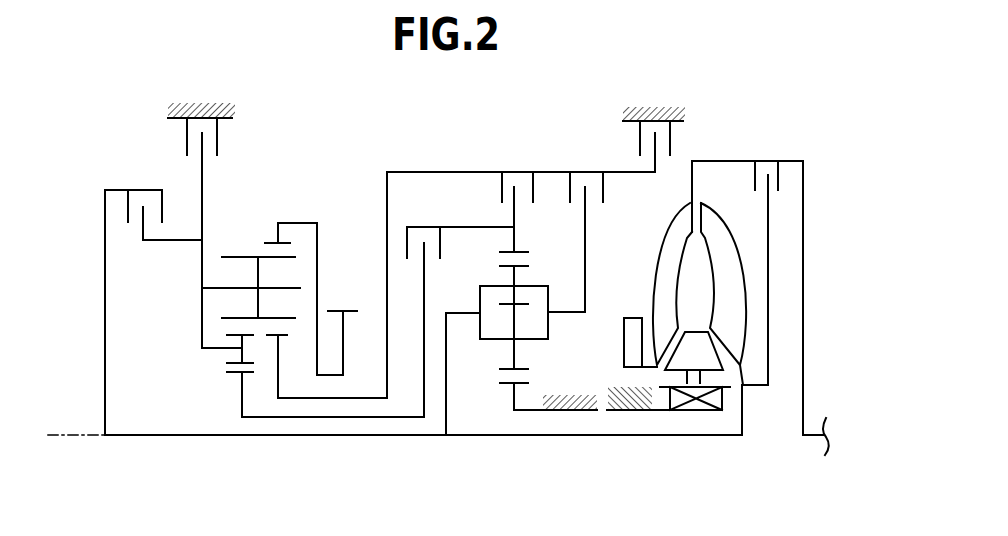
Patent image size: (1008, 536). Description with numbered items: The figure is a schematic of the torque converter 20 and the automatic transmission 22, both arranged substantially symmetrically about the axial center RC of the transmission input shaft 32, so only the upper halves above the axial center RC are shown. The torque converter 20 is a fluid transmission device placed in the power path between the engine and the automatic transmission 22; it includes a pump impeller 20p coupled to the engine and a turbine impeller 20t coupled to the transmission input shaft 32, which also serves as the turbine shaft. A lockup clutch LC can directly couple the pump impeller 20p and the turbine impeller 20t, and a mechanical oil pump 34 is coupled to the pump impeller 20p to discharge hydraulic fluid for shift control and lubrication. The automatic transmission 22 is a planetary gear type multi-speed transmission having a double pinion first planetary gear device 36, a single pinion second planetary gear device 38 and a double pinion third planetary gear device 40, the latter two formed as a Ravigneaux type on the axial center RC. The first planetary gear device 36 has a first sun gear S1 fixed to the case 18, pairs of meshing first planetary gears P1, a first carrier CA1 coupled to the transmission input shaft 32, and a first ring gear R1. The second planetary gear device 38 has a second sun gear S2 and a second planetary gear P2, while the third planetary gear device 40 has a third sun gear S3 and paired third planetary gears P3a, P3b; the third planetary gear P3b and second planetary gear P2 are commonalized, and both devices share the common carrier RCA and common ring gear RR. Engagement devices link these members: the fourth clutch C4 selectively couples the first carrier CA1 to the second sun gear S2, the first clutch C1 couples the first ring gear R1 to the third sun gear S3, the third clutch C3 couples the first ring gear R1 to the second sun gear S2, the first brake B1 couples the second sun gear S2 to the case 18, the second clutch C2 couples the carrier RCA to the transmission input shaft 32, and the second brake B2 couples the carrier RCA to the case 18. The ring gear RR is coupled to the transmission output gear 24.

The automatic transmission 22 is at (177, 80).
The case 18 is at (205, 105).
The second brake B2 is at (209, 233).
The second clutch C2 is at (153, 204).
The ring gear RR is at (272, 225).
The second planetary gear P2 is at (240, 257).
The third planetary gear P3b is at (258, 287).
The transmission output gear 24 is at (348, 309).
The carrier RCA is at (202, 305).
The third planetary gear P3a is at (232, 335).
The third sun gear S3 is at (232, 366).
The second sun gear S2 is at (284, 336).
The first clutch C1 is at (521, 294).
The third clutch C3 is at (516, 201).
The fourth clutch C4 is at (575, 231).
The first ring gear R1 is at (520, 255).
The first planetary gear P1 is at (540, 285).
The first carrier CA1 is at (465, 311).
The first sun gear S1 is at (503, 382).
The first brake B1 is at (661, 146).
The lockup clutch LC is at (746, 171).
The torque converter 20 is at (692, 298).
The pump impeller 20p is at (667, 298).
The turbine impeller 20t is at (725, 278).
The oil pump 34 is at (632, 340).
The third planetary gear device 40 is at (236, 452).
The second planetary gear device 38 is at (277, 452).
The first planetary gear device 36 is at (515, 451).
The transmission input shaft 32 is at (590, 437).
The axial center RC is at (65, 437).